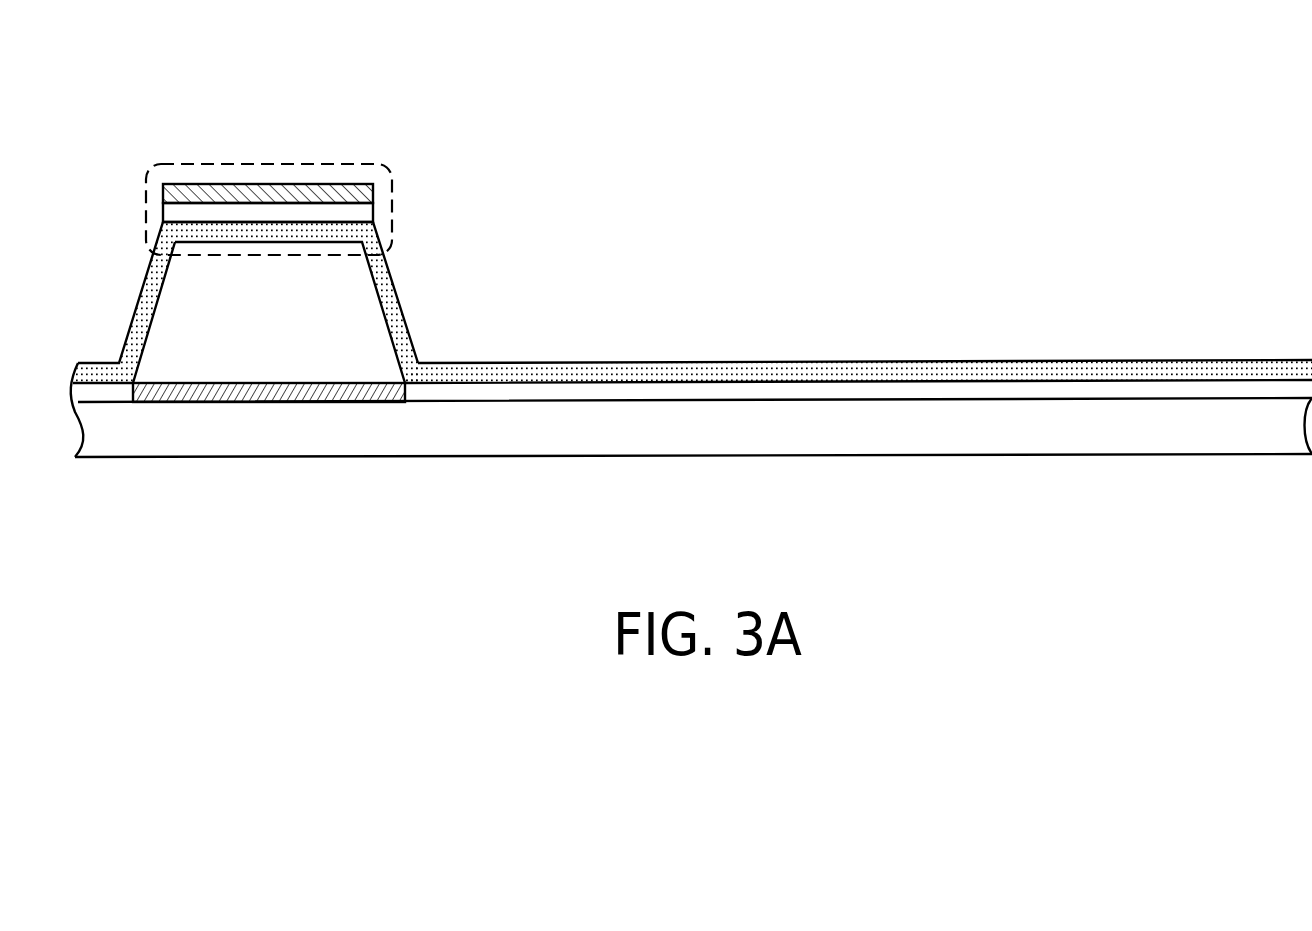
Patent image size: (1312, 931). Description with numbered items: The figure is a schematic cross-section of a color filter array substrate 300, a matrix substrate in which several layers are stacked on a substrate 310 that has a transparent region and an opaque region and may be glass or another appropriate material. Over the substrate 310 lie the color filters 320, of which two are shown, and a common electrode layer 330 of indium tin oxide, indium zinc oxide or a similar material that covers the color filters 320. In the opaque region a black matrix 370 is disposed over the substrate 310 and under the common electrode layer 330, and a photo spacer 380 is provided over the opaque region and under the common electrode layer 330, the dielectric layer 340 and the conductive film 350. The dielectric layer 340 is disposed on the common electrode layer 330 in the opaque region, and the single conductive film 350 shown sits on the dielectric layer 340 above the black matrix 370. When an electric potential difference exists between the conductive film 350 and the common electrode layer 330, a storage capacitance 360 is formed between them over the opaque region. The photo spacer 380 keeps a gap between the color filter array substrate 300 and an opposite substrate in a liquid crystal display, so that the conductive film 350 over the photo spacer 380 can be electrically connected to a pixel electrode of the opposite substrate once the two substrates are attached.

The color filter array substrate 300 is at (1310, 562).
The substrate 310 is at (807, 443).
The color filters 320 is at (117, 393).
The common electrode layer 330 is at (587, 373).
The dielectric layer 340 is at (186, 215).
The conductive film 350 is at (254, 193).
The storage capacitance 360 is at (325, 162).
The black matrix 370 is at (245, 398).
The photo spacer 380 is at (363, 302).